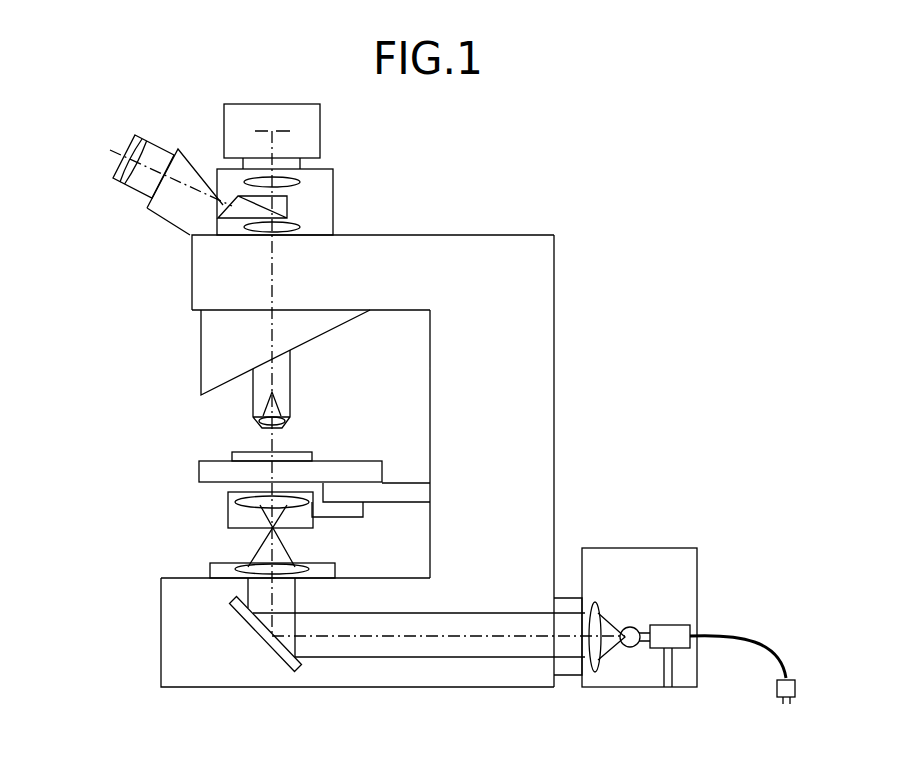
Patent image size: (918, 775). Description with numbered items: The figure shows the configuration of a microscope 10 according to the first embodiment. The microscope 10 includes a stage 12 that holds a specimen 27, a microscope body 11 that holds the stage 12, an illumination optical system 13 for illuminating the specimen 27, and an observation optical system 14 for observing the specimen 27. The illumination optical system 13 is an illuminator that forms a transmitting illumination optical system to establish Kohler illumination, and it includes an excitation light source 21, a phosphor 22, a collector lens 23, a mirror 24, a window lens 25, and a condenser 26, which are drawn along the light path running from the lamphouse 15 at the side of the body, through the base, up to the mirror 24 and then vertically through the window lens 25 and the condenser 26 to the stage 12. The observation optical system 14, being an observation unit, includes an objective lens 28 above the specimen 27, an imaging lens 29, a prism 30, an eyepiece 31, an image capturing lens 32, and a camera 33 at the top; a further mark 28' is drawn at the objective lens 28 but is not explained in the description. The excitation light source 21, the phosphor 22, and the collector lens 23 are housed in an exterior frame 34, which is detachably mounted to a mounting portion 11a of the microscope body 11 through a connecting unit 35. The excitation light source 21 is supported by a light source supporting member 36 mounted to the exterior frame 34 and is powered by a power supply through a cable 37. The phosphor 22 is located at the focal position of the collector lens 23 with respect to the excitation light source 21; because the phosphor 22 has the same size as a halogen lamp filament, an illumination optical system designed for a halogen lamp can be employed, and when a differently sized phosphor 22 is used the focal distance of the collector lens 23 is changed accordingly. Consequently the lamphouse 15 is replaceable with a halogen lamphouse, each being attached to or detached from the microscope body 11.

The microscope 10 is at (509, 163).
The microscope body 11 is at (557, 429).
The mounting portion 11a is at (557, 667).
The stage 12 is at (364, 461).
The illumination optical system 13 is at (153, 527).
The observation optical system 14 is at (181, 290).
The lamphouse 15 is at (683, 527).
The excitation light source 21 is at (670, 624).
The phosphor 22 is at (629, 626).
The collector lens 23 is at (598, 602).
The mirror 24 is at (259, 637).
The window lens 25 is at (228, 565).
The condenser 26 is at (228, 506).
The specimen 27 is at (243, 452).
The objective lens 28 is at (299, 409).
The focal point / light cone 28' is at (299, 392).
The imaging lens 29 is at (301, 227).
The prism 30 is at (230, 202).
The eyepiece 31 is at (152, 150).
The image capturing lens 32 is at (301, 180).
The camera 33 is at (320, 130).
The exterior frame 34 is at (640, 547).
The connecting unit 35 is at (567, 596).
The light source supporting member 36 is at (659, 678).
The cable 37 is at (753, 636).